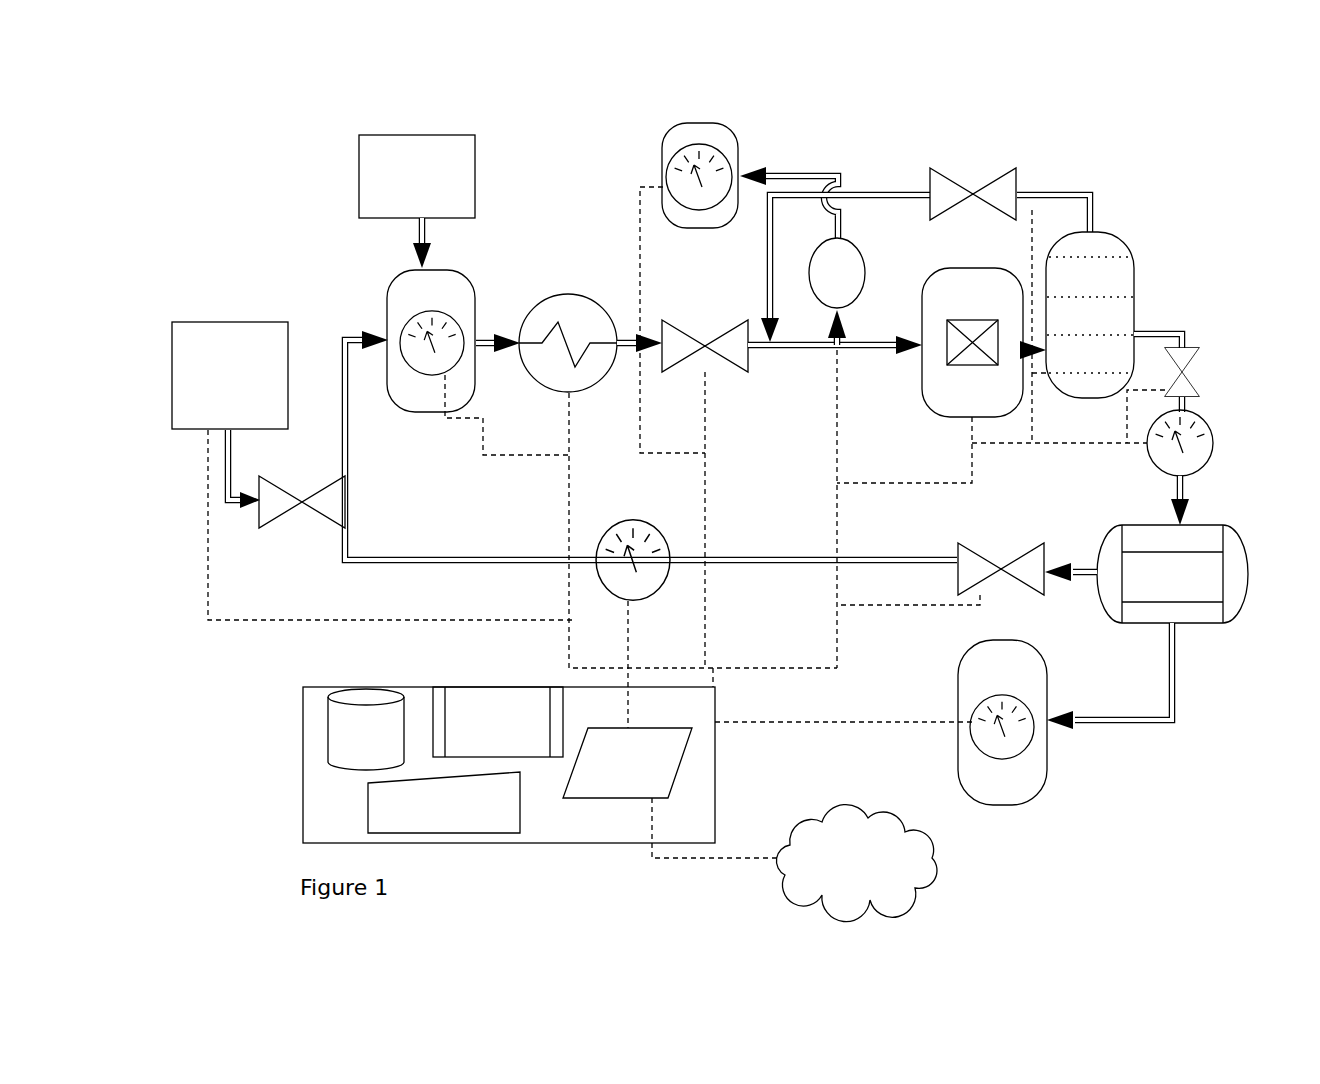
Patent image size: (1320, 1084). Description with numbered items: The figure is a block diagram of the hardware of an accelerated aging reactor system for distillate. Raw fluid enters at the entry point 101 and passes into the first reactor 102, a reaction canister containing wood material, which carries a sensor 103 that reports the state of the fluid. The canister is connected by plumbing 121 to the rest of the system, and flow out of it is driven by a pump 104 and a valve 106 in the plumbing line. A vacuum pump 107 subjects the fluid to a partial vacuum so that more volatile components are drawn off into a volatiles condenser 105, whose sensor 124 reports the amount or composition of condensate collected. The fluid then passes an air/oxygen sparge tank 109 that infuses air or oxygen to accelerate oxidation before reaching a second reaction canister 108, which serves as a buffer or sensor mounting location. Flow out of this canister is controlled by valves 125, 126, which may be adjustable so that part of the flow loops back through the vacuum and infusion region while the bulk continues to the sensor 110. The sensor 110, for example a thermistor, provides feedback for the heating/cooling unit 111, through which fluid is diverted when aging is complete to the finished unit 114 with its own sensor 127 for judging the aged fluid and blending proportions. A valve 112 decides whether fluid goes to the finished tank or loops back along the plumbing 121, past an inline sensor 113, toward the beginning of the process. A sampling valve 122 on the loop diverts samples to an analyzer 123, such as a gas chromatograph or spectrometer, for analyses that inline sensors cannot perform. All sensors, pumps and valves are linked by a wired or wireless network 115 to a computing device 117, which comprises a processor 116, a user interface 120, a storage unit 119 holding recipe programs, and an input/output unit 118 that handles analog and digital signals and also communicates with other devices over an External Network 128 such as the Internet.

The entry point 101 is at (482, 163).
The first reactor 102 is at (482, 286).
The sensor 103 is at (396, 325).
The pump 104 is at (577, 290).
The volatiles condenser 105 is at (744, 157).
The valve 106 is at (742, 376).
The vacuum pump 107 is at (870, 257).
The reaction canister 108 is at (1142, 300).
The air/oxygen sparge tank 109 is at (965, 264).
The sensor 110 is at (1206, 419).
The heating/cooling unit 111 is at (1212, 632).
The valve 112 is at (1011, 551).
The sensor 113 is at (632, 608).
The finished unit 114 is at (1054, 772).
The network 115 is at (828, 729).
The processor 116 is at (486, 695).
The computing device 117 is at (588, 839).
The input/output 118 is at (672, 762).
The storage unit 119 is at (356, 692).
The user interface 120 is at (446, 844).
The plumbing 121 is at (401, 572).
The sampling valve 122 is at (270, 537).
The analyzer 123 is at (256, 310).
The sensor 124 is at (658, 168).
The valve 125 is at (983, 177).
The valve 126 is at (1204, 350).
The sensor 127 is at (970, 754).
The External Network 128 is at (934, 890).